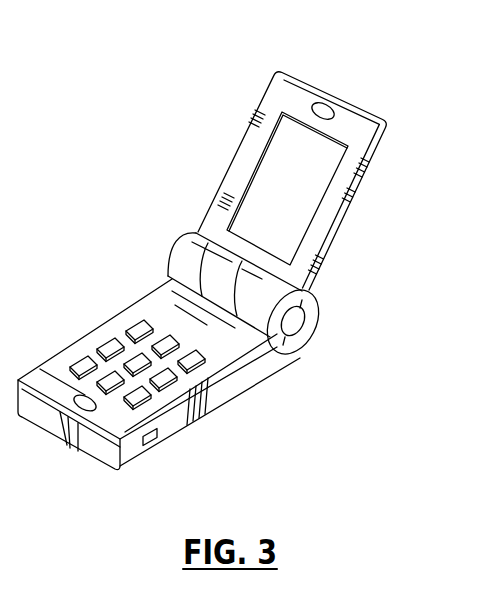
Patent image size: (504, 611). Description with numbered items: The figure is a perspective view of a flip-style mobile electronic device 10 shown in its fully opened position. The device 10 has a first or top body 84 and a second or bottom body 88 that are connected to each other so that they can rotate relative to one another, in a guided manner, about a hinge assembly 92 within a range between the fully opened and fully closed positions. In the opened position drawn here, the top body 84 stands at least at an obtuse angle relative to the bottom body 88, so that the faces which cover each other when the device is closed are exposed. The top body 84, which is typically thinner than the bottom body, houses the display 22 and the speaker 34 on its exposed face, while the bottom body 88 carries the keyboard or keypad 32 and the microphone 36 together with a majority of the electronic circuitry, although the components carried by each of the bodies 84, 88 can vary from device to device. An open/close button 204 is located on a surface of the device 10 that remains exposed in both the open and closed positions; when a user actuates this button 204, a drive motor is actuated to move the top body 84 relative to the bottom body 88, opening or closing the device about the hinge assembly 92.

The device 10 is at (214, 139).
The display 22 is at (297, 143).
The keyboard or keypad 32 is at (150, 321).
The speaker 34 is at (323, 110).
The microphone 36 is at (67, 445).
The first or top body 84 is at (358, 213).
The second or bottom body 88 is at (217, 388).
The hinge assembly 92 is at (314, 338).
The open/close button 204 is at (155, 437).